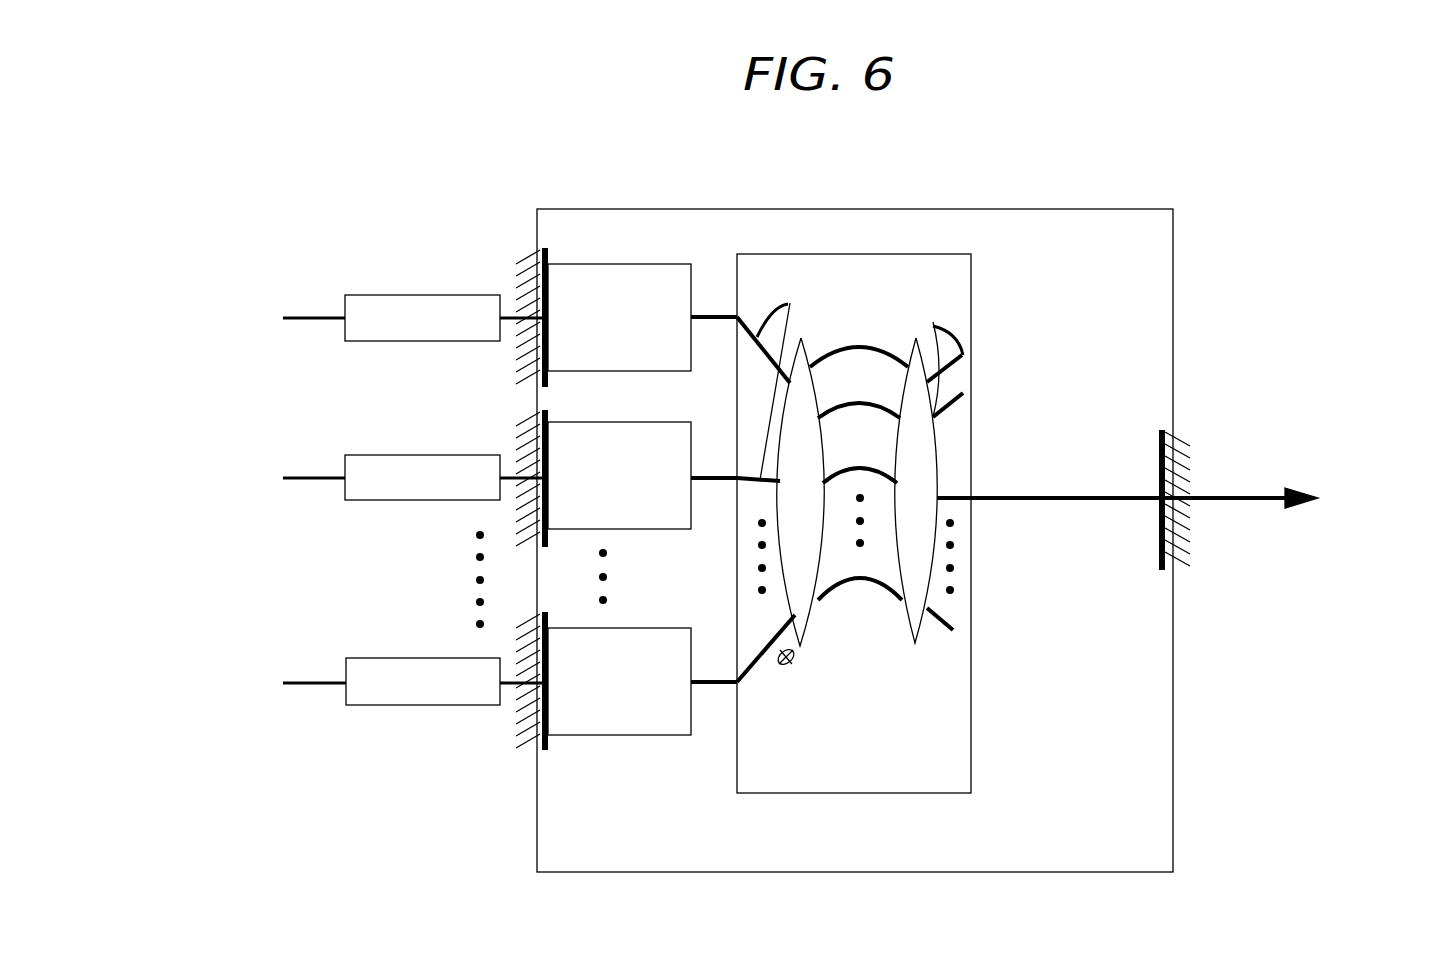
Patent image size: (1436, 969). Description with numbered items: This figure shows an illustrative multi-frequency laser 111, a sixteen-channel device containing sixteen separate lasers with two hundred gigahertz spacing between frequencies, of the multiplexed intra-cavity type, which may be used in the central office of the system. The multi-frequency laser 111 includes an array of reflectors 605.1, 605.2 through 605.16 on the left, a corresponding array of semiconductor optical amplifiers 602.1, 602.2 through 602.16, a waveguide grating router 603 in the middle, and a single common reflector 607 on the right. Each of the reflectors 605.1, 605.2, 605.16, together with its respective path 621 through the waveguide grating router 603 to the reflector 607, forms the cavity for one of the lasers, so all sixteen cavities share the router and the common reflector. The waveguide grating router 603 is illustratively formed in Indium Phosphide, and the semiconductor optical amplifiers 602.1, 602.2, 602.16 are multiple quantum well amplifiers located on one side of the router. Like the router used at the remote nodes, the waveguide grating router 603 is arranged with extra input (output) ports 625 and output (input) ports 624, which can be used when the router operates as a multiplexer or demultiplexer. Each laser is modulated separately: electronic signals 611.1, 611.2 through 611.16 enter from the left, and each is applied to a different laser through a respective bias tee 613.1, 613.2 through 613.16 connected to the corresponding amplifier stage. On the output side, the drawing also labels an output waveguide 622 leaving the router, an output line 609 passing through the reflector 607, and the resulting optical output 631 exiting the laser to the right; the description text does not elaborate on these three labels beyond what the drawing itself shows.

The multi-frequency laser 111 is at (1174, 815).
The waveguide grating router 603 is at (972, 740).
The path 621 is at (772, 700).
The output (input) ports 624 is at (932, 665).
The extra input (output) ports 625 is at (800, 660).
The output waveguide 622 is at (962, 500).
The output line 609 is at (992, 498).
The optical output 631 is at (1248, 497).
The reflector 607 is at (1168, 430).
The reflector 605.1 is at (546, 250).
The reflector 605.2 is at (550, 412).
The reflector 605.16 is at (550, 750).
The semiconductor optical amplifier 602.1 is at (620, 264).
The semiconductor optical amplifier 602.2 is at (620, 530).
The semiconductor optical amplifier 602.16 is at (620, 628).
The bias tee 613.1 is at (424, 295).
The bias tee 613.2 is at (424, 455).
The bias tee 613.16 is at (424, 658).
The electronic signal 611.1 is at (282, 318).
The electronic signal 611.2 is at (281, 478).
The electronic signal 611.16 is at (275, 683).